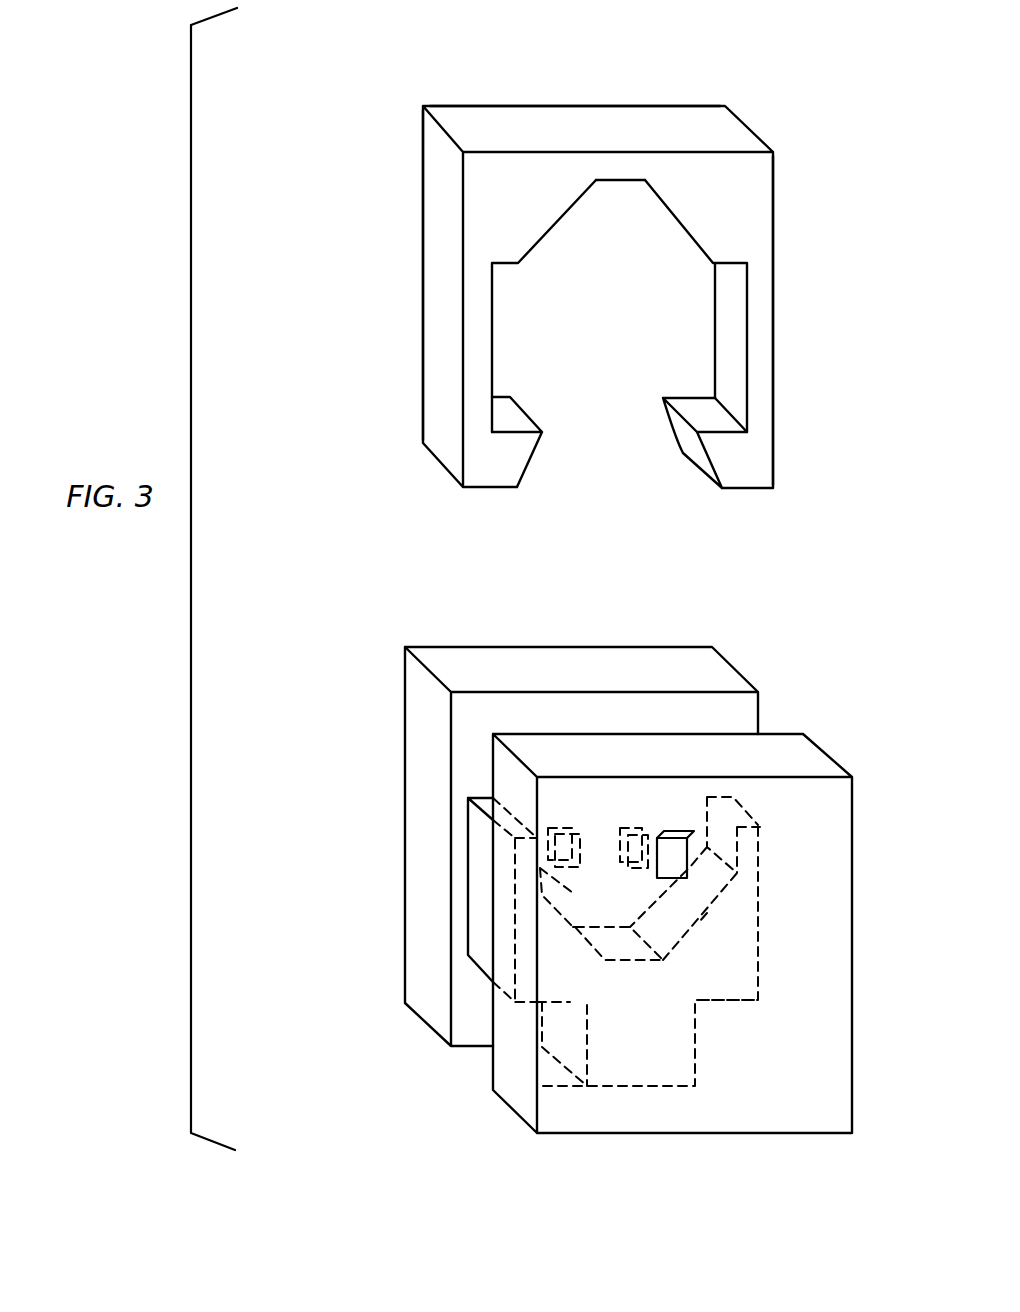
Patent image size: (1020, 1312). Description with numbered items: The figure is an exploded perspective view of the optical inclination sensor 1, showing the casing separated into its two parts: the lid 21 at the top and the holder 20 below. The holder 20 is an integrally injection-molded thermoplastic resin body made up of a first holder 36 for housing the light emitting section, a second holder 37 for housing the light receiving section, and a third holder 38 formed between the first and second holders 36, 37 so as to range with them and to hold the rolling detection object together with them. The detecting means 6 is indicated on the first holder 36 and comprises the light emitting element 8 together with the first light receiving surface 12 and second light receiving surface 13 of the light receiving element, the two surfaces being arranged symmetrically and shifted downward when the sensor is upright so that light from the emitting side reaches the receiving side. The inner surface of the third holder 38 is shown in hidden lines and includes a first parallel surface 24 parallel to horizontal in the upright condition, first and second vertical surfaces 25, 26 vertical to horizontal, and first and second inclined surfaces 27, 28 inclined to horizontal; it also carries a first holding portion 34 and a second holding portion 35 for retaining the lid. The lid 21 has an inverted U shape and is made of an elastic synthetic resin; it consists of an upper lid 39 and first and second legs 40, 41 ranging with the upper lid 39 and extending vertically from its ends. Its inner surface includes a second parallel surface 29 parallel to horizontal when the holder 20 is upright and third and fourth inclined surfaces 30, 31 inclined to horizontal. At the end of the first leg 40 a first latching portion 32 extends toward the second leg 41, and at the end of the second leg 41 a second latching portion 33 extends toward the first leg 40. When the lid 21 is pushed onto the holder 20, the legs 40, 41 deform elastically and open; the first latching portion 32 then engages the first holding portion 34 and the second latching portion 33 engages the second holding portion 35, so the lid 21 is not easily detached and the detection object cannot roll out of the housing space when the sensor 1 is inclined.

The optical inclination sensor 1 is at (802, 78).
The detecting means 6 is at (675, 738).
The light emitting element 8 is at (675, 840).
The first light receiving surface 12 is at (568, 828).
The second light receiving surface 13 is at (632, 828).
The holder 20 is at (320, 645).
The lid 21 is at (777, 138).
The first parallel surface 24 is at (628, 950).
The first vertical surface 25 is at (548, 897).
The second vertical surface 26 is at (725, 835).
The first inclined surface 27 is at (566, 917).
The second inclined surface 28 is at (703, 915).
The second parallel surface 29 is at (618, 183).
The third inclined surface 30 is at (548, 232).
The fourth inclined surface 31 is at (678, 222).
The first latching portion 32 is at (516, 452).
The second latching portion 33 is at (718, 452).
The first holding portion 34 is at (583, 997).
The second holding portion 35 is at (728, 1000).
The first holder 36 is at (532, 752).
The second holder 37 is at (418, 690).
The third holder 38 is at (484, 912).
The upper lid 39 is at (594, 127).
The first leg 40 is at (440, 320).
The second leg 41 is at (760, 316).